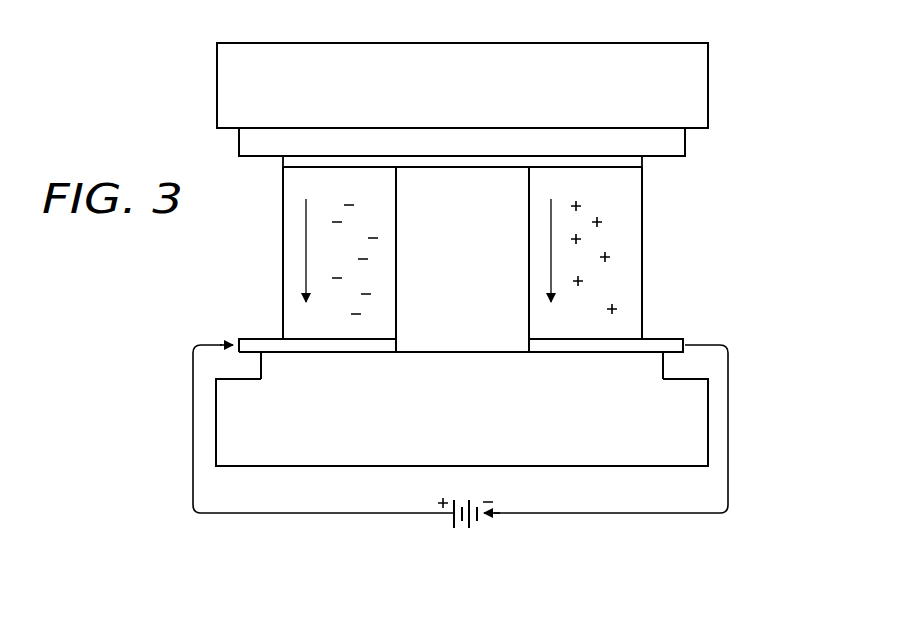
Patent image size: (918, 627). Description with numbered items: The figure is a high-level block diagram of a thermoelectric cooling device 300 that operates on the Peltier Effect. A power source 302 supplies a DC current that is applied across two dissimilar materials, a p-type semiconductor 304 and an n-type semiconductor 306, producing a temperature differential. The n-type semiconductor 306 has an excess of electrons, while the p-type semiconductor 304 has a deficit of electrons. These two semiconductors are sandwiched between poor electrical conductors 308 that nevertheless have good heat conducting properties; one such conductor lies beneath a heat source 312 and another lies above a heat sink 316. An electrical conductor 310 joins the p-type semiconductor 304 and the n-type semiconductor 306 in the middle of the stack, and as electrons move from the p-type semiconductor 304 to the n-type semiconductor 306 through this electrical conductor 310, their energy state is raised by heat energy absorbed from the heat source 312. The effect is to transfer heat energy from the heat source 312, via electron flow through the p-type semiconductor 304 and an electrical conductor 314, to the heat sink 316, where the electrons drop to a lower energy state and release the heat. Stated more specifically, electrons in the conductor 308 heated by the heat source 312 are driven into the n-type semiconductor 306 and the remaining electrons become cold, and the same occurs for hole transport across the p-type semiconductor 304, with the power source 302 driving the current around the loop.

The thermoelectric device / system 300 is at (768, 54).
The power source 302 is at (462, 535).
The p-type semiconductor 304 is at (636, 250).
The n-type semiconductor 306 is at (289, 248).
The poor electrical conductor 308 is at (680, 142).
The electrical conductor 310 is at (460, 160).
The heat source 312 is at (645, 97).
The electrical conductor 314 is at (668, 345).
The heat sink 316 is at (645, 435).